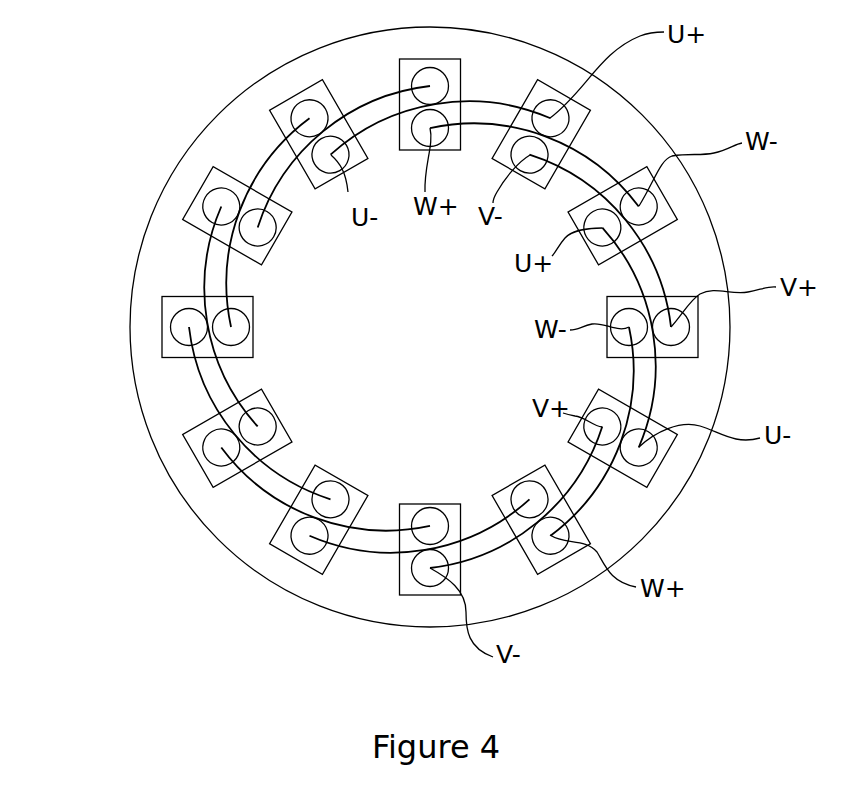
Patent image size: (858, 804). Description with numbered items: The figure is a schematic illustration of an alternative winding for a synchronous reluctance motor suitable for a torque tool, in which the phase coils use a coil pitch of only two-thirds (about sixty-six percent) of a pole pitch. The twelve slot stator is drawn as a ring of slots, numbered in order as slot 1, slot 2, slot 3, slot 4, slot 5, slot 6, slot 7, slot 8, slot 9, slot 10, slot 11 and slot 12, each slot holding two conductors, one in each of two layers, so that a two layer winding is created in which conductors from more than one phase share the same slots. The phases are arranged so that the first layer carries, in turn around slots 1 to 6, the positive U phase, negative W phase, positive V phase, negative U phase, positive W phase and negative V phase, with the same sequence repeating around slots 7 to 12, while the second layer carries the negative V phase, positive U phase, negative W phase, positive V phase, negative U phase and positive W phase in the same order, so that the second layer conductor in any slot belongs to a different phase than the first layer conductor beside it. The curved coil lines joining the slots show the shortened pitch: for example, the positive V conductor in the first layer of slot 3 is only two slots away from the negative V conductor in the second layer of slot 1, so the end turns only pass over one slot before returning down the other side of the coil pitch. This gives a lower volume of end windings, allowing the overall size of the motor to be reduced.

The slot 1 is at (541, 127).
The slot 2 is at (624, 216).
The slot 3 is at (665, 327).
The slot 4 is at (626, 438).
The slot 5 is at (541, 528).
The slot 6 is at (430, 566).
The slot 7 is at (319, 525).
The slot 8 is at (235, 438).
The slot 9 is at (195, 327).
The slot 10 is at (230, 216).
The slot 11 is at (319, 127).
The slot 12 is at (430, 88).